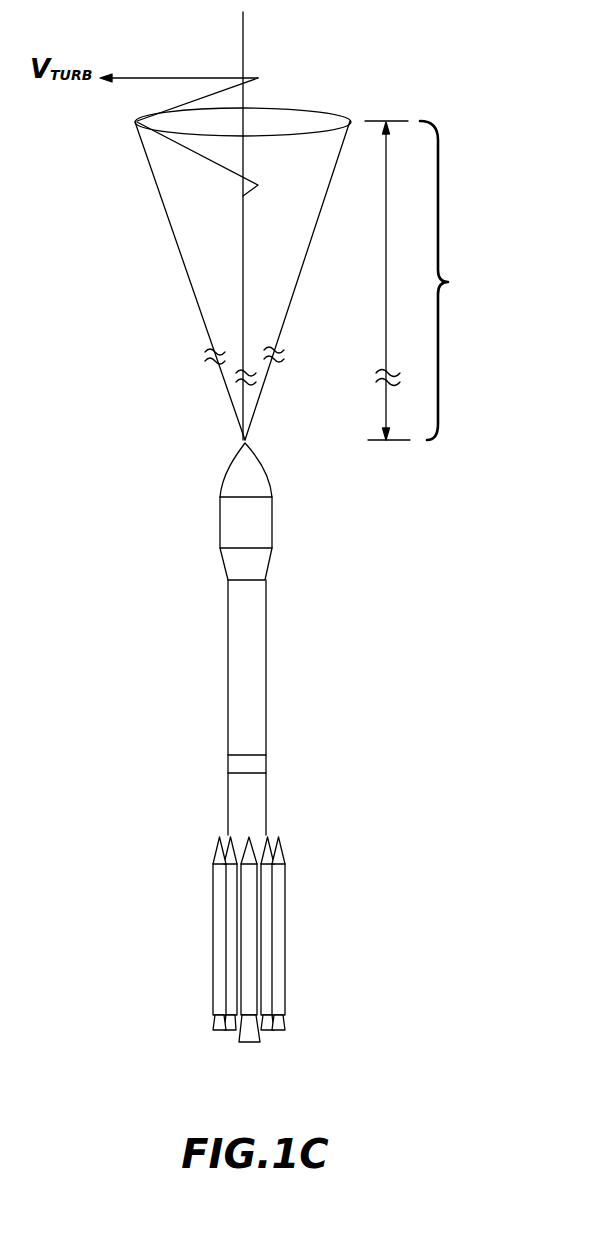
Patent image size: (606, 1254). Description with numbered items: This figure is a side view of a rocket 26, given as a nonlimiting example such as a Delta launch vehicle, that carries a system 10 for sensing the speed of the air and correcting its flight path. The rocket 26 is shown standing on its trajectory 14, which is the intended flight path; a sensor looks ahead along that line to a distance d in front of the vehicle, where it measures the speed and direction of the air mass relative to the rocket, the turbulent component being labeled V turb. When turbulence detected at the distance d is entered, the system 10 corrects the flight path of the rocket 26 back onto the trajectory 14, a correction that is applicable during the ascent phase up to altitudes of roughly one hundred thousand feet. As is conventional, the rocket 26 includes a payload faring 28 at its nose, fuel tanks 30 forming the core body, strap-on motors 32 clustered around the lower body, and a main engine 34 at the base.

The system 10 is at (247, 765).
The trajectory 14 is at (243, 32).
The rocket 26 is at (452, 754).
The payload faring 28 is at (212, 524).
The fuel tanks 30 is at (220, 708).
The strap-on motors 32 is at (204, 940).
The main engine 34 is at (278, 1052).